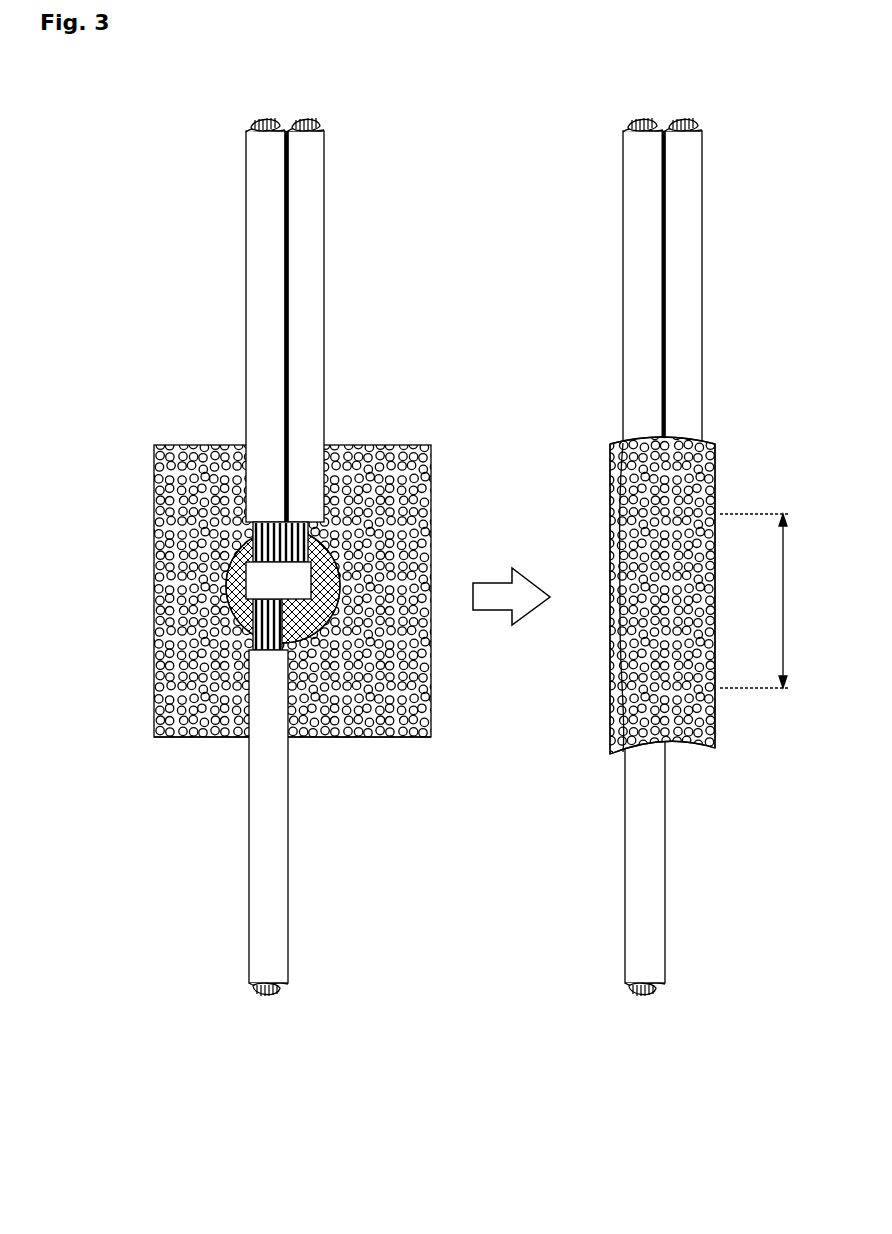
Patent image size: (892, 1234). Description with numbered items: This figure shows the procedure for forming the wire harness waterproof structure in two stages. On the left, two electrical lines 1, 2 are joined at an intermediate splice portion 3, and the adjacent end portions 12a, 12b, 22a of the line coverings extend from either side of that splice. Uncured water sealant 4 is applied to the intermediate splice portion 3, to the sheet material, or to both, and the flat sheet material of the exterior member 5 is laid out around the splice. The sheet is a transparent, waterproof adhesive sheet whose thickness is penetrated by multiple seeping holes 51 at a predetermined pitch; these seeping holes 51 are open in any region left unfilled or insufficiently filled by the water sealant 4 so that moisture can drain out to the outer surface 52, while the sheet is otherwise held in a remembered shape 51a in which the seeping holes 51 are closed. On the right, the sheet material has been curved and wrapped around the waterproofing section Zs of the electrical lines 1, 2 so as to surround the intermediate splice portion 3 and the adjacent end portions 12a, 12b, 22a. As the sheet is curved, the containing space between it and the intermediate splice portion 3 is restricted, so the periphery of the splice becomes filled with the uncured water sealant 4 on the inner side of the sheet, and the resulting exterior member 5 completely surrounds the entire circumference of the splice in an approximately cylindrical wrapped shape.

The electrical line 1 is at (237, 215).
The electrical line 2 is at (328, 228).
The adjacent end portion of covering 12a is at (255, 507).
The adjacent end portion of covering 22a is at (317, 503).
The adjacent end portion of covering 12b is at (253, 667).
The intermediate splice portion 3 is at (318, 578).
The water sealant 4 is at (227, 592).
The exterior member 5 is at (718, 588).
The seeping holes 51 is at (154, 461).
The remembered shape 51a is at (717, 463).
The outer surface 52 is at (610, 462).
The waterproofing section Zs is at (766, 601).